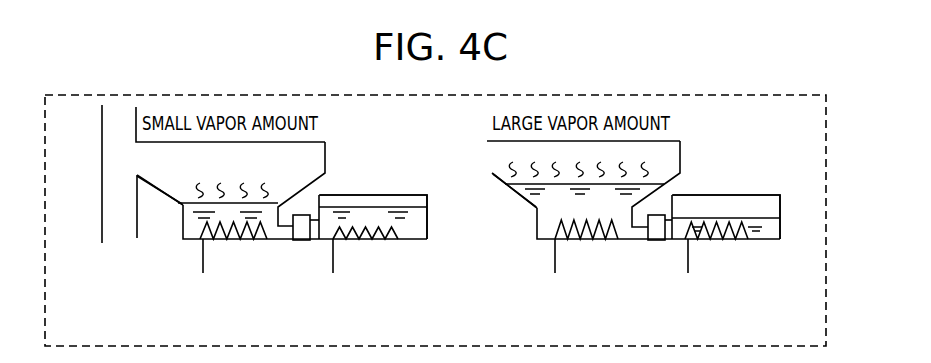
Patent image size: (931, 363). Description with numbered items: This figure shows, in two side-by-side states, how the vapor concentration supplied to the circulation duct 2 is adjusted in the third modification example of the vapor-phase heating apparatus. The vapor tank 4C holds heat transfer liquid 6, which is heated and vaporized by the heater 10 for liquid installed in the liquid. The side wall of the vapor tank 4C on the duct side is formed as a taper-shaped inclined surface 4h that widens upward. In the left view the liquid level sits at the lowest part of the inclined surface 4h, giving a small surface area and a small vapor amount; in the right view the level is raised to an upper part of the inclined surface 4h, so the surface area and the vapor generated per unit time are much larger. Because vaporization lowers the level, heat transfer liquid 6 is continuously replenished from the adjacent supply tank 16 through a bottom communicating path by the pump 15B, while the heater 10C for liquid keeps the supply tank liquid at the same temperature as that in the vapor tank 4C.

The circulation duct 2 is at (117, 195).
The vapor tank 4C is at (263, 170).
The inclined surface 4h is at (158, 196).
The heat transfer liquid 6 is at (272, 216).
The heater for liquid 10 is at (268, 239).
The heater for liquid 10C is at (400, 239).
The pump 15B is at (300, 219).
The supply tank 16 is at (410, 194).